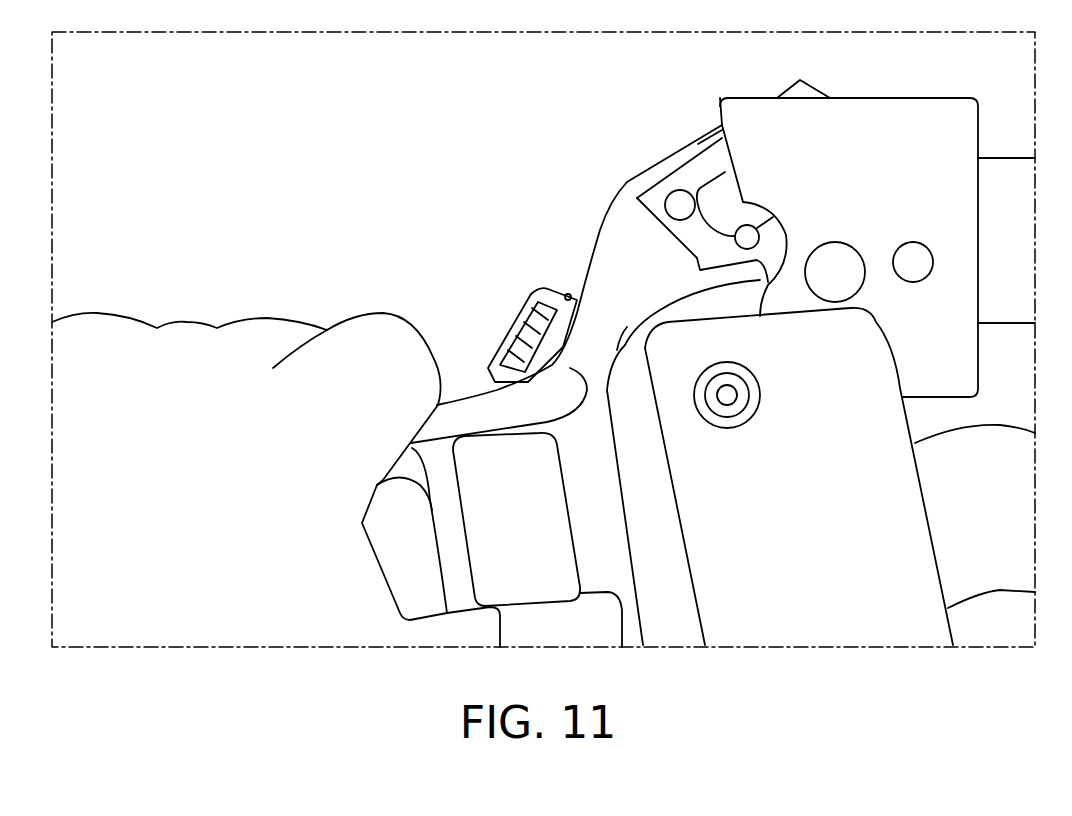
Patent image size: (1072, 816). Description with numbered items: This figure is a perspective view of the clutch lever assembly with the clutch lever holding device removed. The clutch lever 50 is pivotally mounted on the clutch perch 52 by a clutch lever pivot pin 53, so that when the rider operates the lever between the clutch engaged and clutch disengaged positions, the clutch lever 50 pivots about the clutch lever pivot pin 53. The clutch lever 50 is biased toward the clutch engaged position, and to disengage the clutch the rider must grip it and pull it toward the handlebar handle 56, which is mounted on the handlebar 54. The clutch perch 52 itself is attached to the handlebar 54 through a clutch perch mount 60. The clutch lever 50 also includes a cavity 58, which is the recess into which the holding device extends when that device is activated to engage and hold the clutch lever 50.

The clutch lever 50 is at (492, 403).
The clutch perch 52 is at (858, 133).
The clutch lever pivot pin 53 is at (830, 257).
The handlebar 54 is at (952, 450).
The handlebar handle 56 is at (377, 485).
The cavity 58 is at (710, 172).
The clutch perch mount 60 is at (730, 202).